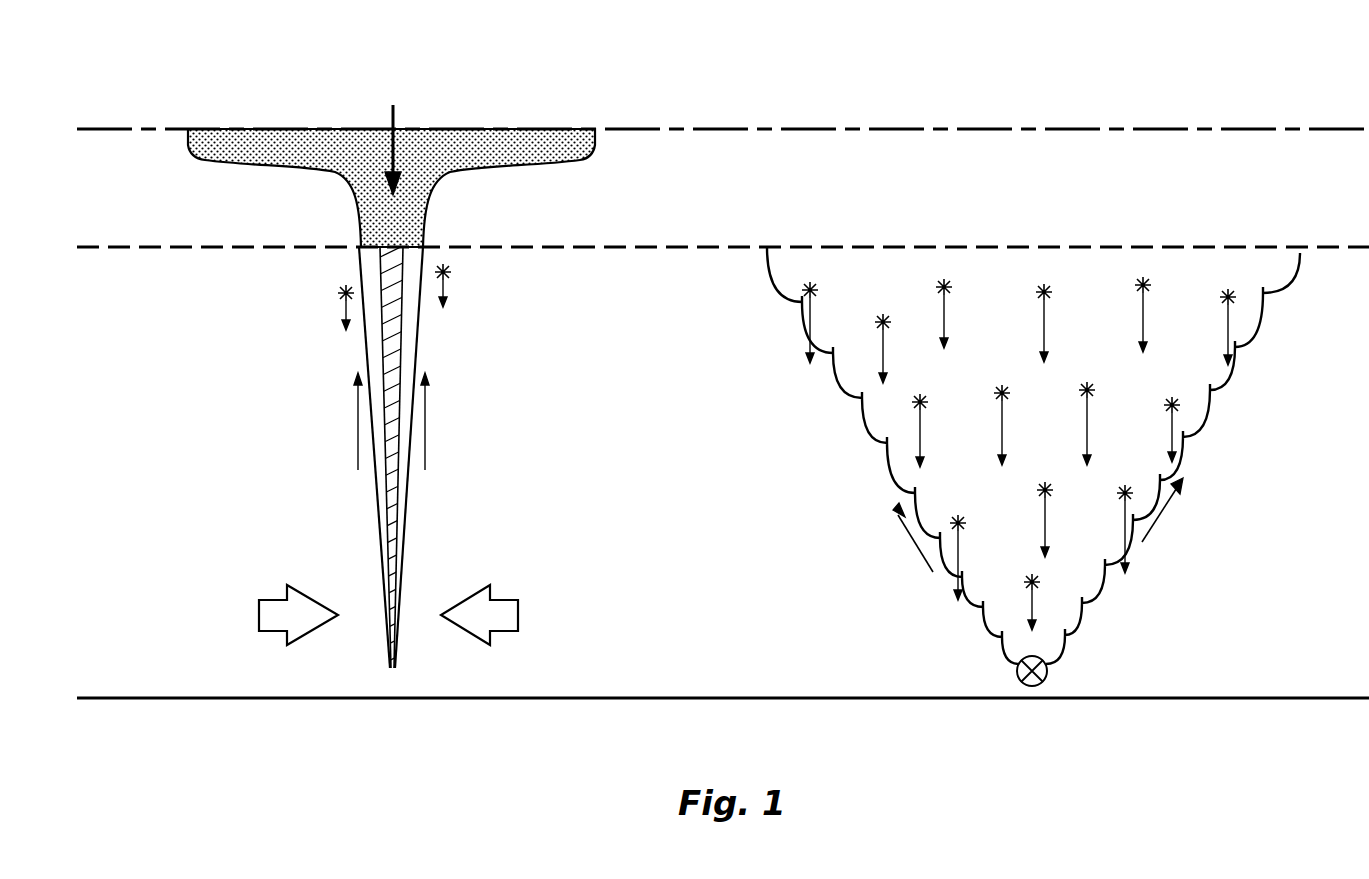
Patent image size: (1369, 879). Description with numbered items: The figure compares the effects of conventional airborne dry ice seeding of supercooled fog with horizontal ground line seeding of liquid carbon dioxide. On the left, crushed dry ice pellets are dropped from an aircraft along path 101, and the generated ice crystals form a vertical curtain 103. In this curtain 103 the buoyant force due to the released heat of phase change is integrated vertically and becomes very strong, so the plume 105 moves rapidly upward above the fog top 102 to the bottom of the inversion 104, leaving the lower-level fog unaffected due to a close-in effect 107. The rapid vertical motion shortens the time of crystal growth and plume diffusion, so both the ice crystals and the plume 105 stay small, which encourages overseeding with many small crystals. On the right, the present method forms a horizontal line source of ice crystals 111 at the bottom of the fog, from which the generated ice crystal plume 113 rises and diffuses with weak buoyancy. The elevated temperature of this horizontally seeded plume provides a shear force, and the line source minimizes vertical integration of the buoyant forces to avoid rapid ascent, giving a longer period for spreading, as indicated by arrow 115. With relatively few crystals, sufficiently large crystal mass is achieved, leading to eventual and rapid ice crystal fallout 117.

The aircraft dry ice drop path 101 is at (393, 110).
The fog top 102 is at (690, 246).
The vertical curtain of ice crystals 103 is at (452, 463).
The bottom of the inversion 104 is at (637, 129).
The plume 105 is at (480, 318).
The close-in effect 107 is at (518, 615).
The horizontal line source of ice crystals 111 is at (1045, 680).
The ice crystal plume 113 is at (1080, 563).
The spreading arrow 115 is at (1165, 510).
The ice crystal fallout 117 is at (1228, 322).